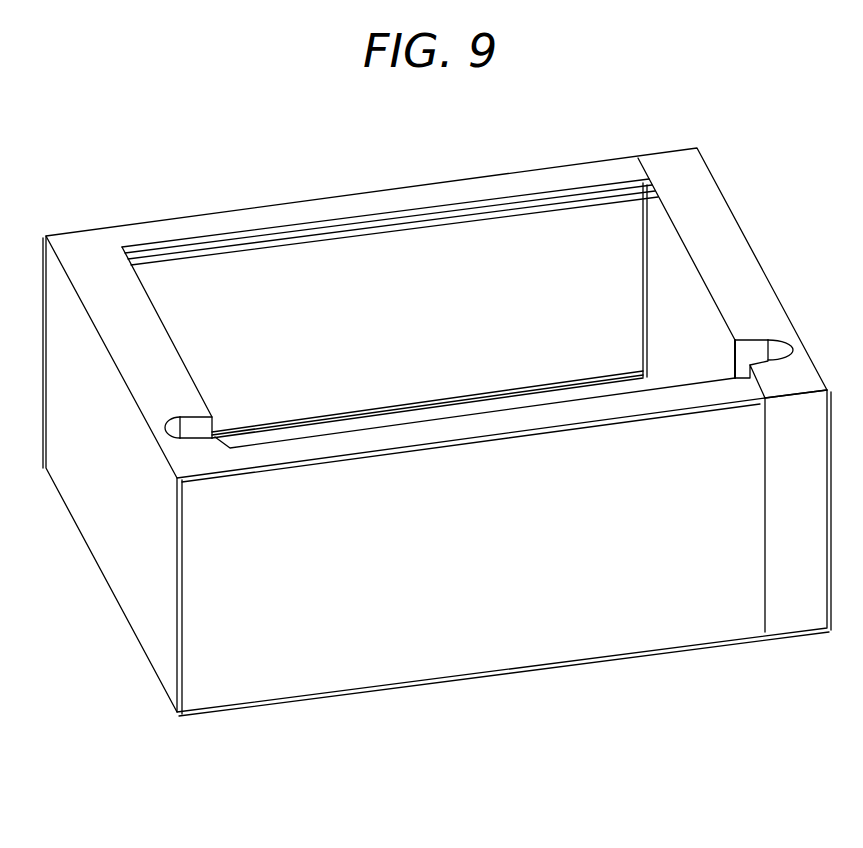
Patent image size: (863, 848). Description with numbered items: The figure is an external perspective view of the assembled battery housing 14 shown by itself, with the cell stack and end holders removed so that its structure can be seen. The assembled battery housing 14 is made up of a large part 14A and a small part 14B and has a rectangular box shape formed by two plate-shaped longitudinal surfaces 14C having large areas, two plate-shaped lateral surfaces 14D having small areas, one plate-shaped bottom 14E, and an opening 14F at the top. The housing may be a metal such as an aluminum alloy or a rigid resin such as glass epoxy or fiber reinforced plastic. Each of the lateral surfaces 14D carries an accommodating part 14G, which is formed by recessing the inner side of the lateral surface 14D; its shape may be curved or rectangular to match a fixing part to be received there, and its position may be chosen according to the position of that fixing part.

The assembled battery housing 14 is at (157, 795).
The large part 14A is at (350, 662).
The small part 14B is at (800, 602).
The longitudinal surface 14C is at (300, 212).
The lateral surface 14D is at (143, 345).
The bottom 14E is at (432, 408).
The opening 14F is at (598, 280).
The accommodating part 14G is at (188, 432).